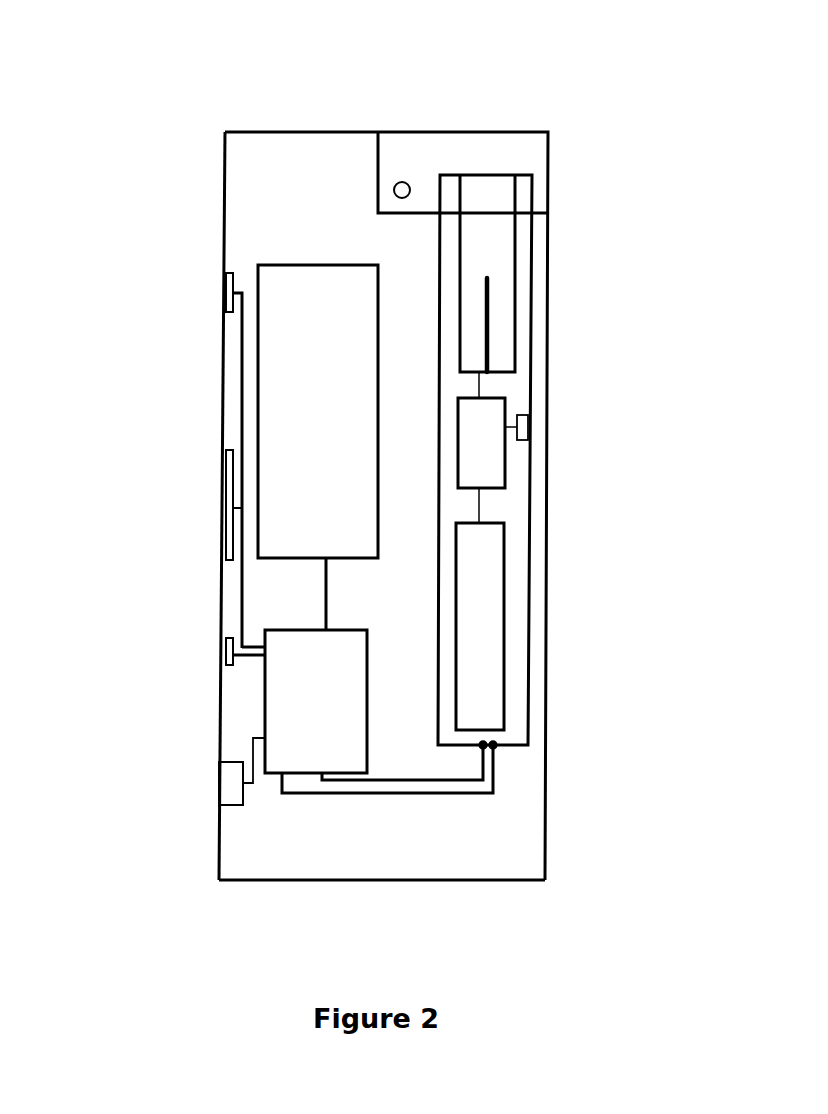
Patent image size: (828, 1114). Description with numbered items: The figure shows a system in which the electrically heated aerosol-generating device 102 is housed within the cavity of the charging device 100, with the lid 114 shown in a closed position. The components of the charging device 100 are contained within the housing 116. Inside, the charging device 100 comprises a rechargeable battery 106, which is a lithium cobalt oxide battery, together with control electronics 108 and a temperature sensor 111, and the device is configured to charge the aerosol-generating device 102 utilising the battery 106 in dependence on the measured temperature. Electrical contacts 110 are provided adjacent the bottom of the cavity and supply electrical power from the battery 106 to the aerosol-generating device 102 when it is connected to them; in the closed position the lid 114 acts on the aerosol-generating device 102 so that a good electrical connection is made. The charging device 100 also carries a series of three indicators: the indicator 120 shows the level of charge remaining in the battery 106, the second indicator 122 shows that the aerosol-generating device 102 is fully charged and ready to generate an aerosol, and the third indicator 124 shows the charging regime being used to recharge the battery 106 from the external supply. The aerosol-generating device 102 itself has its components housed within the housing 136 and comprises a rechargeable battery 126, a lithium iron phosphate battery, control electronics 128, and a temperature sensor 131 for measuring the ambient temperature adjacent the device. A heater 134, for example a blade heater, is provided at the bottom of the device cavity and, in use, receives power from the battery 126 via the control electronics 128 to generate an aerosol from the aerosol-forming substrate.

The charging device 100 is at (270, 110).
The electrically heated aerosol-generating device 102 is at (520, 263).
The rechargeable battery 106 is at (266, 385).
The control electronics 108 is at (265, 706).
The electrical contacts 110 is at (490, 746).
The temperature sensor 111 is at (232, 778).
The lid 114 is at (413, 145).
The housing 116 is at (225, 835).
The indicator 120 is at (221, 509).
The second indicator 122 is at (219, 653).
The third indicator 124 is at (221, 299).
The rechargeable battery 126 is at (480, 655).
The control electronics 128 is at (480, 457).
The temperature sensor 131 is at (530, 420).
The heater 134 is at (478, 350).
The housing 136 is at (497, 300).